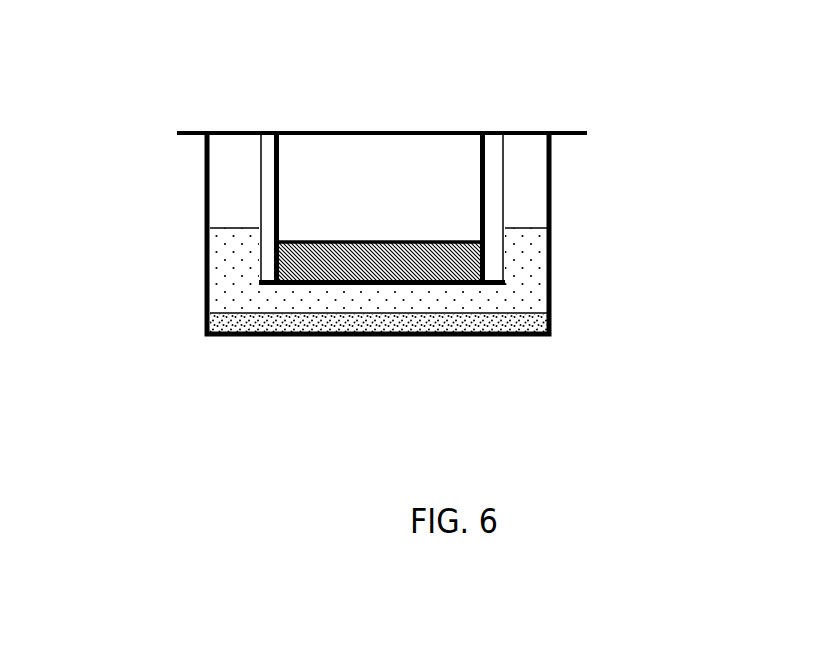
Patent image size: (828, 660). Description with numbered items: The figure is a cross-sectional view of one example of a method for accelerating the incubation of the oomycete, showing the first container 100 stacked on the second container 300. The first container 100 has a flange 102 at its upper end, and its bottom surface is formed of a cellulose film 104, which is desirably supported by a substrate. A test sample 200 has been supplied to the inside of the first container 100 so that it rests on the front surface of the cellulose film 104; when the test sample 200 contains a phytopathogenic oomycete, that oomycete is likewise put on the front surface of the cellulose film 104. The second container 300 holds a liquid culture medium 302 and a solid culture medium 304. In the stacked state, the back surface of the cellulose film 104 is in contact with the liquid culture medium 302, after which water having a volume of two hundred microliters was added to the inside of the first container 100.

The first container 100 is at (407, 220).
The flange 102 is at (575, 138).
The cellulose film 104 is at (453, 283).
The test sample 200 is at (307, 270).
The second container 300 is at (205, 272).
The liquid culture medium 302 is at (373, 303).
The solid culture medium 304 is at (512, 323).